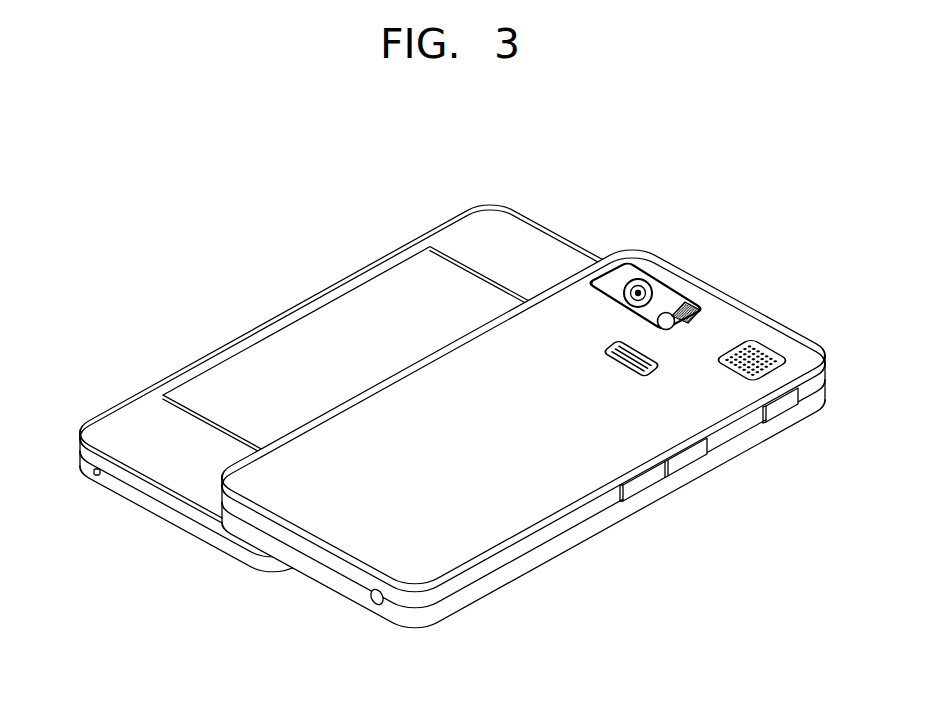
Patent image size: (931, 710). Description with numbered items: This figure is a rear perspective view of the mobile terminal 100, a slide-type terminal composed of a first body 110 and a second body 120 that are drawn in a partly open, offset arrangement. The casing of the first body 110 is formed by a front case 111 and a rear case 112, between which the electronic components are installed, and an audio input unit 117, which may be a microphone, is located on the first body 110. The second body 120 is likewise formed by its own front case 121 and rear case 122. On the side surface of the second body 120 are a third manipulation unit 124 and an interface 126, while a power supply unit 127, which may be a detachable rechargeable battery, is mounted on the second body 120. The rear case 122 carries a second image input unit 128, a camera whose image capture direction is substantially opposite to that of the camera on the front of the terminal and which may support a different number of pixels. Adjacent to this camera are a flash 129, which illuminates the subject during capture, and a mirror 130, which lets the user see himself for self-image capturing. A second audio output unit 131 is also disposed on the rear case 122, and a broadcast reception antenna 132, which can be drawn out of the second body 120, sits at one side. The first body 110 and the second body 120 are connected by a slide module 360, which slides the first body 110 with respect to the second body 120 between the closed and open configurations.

The mobile terminal 100 is at (336, 239).
The first body 110 is at (146, 577).
The front case 111 is at (190, 527).
The rear case 112 is at (163, 503).
The audio input unit 117 is at (93, 474).
The second body 120 is at (643, 578).
The front case 121 is at (582, 533).
The rear case 122 is at (533, 545).
The third manipulation unit 124 is at (655, 478).
The interface 126 is at (780, 413).
The power supply unit 127 is at (455, 557).
The second image input unit 128 is at (641, 293).
The flash 129 is at (687, 311).
The mirror 130 is at (669, 318).
The second audio output unit 131 is at (772, 353).
The broadcast reception antenna 132 is at (372, 601).
The slide module 360 is at (323, 322).